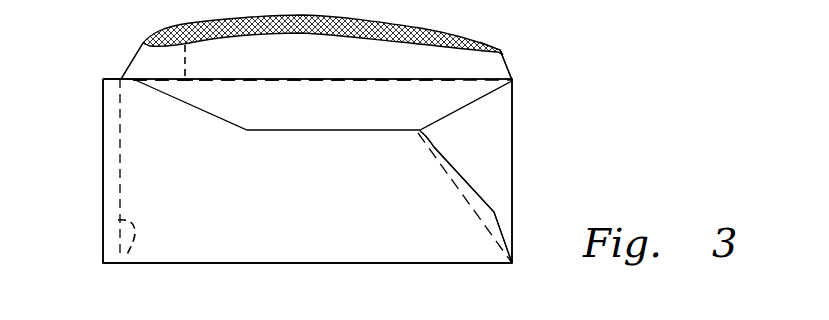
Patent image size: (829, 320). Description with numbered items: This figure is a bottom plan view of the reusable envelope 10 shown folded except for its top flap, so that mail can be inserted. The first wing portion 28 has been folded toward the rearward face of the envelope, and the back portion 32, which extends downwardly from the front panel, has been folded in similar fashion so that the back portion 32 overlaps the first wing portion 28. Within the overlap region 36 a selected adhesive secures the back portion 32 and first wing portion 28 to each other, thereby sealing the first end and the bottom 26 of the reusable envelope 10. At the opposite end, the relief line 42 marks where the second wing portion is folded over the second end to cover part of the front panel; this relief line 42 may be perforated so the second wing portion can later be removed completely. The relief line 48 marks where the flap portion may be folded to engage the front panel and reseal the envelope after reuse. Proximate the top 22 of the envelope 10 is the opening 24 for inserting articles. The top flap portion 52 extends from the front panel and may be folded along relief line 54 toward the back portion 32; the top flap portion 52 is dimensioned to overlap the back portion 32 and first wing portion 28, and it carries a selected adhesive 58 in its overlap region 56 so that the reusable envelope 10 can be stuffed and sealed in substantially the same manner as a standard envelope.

The reusable envelope 10 is at (613, 87).
The top 22 is at (455, 80).
The opening 24 is at (170, 90).
The bottom 26 is at (291, 264).
The first wing portion 28 is at (488, 143).
The back portion 32 is at (285, 195).
The overlap region 36 is at (470, 198).
The relief line 42 is at (103, 137).
The relief line 48 is at (128, 252).
The top flap portion 52 is at (313, 77).
The relief line 54 is at (168, 23).
The overlap region 56 is at (390, 25).
The adhesive 58 is at (457, 42).